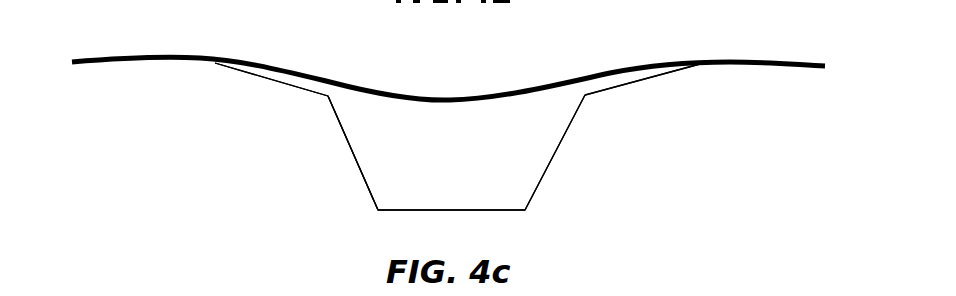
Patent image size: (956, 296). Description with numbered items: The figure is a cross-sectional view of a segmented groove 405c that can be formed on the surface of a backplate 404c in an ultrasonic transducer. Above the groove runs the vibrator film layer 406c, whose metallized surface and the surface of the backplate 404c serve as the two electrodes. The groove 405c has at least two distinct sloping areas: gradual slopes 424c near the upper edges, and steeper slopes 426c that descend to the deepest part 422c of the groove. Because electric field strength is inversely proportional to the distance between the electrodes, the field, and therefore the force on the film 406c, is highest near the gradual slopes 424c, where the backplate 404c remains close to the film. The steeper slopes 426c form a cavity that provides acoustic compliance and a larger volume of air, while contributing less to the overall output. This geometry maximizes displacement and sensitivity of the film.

The vibrator film layer 406c is at (190, 45).
The backplate 404c is at (222, 153).
The gradually sloping areas 424c is at (292, 97).
The steeper slopes 426c is at (320, 131).
The segmented groove 405c is at (330, 186).
The deepest part of the groove 422c is at (466, 227).